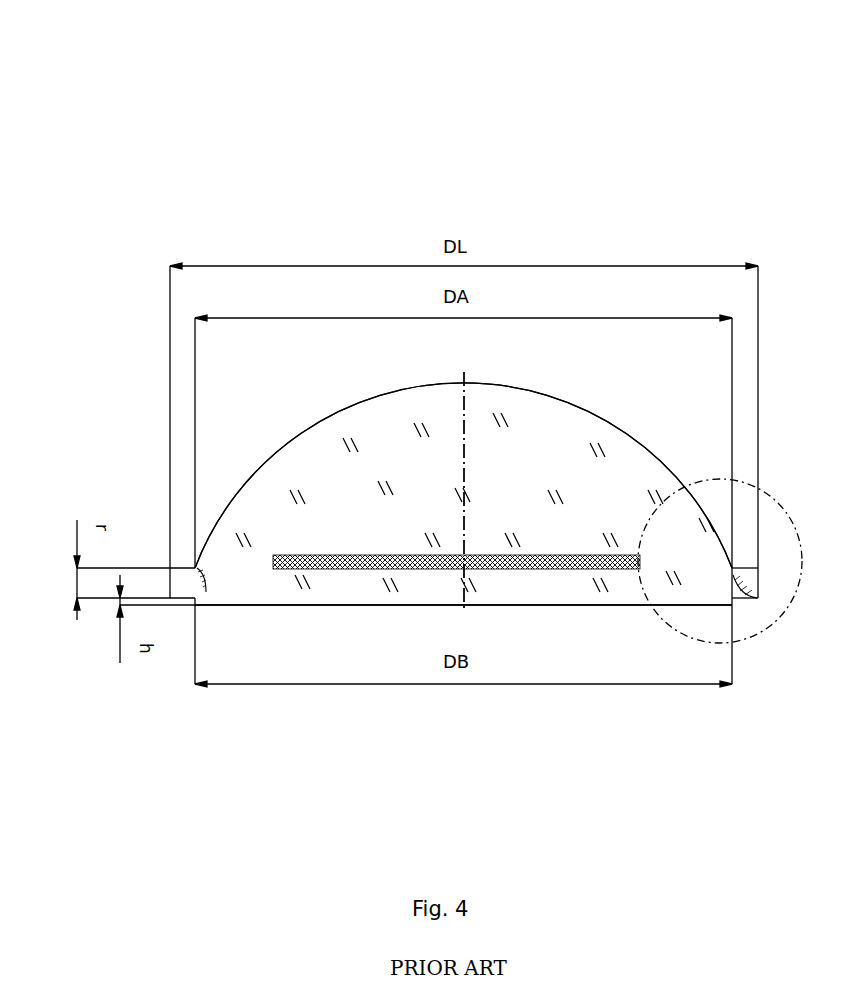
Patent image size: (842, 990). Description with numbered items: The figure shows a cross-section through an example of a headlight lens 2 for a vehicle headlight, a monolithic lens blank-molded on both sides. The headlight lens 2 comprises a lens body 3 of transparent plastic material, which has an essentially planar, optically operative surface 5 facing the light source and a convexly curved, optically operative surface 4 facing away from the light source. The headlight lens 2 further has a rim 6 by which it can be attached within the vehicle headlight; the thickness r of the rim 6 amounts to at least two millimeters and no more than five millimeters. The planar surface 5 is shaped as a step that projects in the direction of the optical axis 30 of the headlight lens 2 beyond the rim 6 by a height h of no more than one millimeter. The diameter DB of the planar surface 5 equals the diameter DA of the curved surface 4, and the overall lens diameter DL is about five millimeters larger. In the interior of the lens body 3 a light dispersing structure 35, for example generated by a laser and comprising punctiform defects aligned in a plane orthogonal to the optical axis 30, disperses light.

The headlight lens 2 is at (680, 130).
The lens body 3 is at (262, 522).
The convexly curved optically operative surface 4 is at (297, 442).
The essentially planar optically operative surface 5 is at (299, 605).
The rim 6 is at (188, 580).
The optical axis 30 is at (464, 505).
The light dispersing structure 35 is at (568, 561).